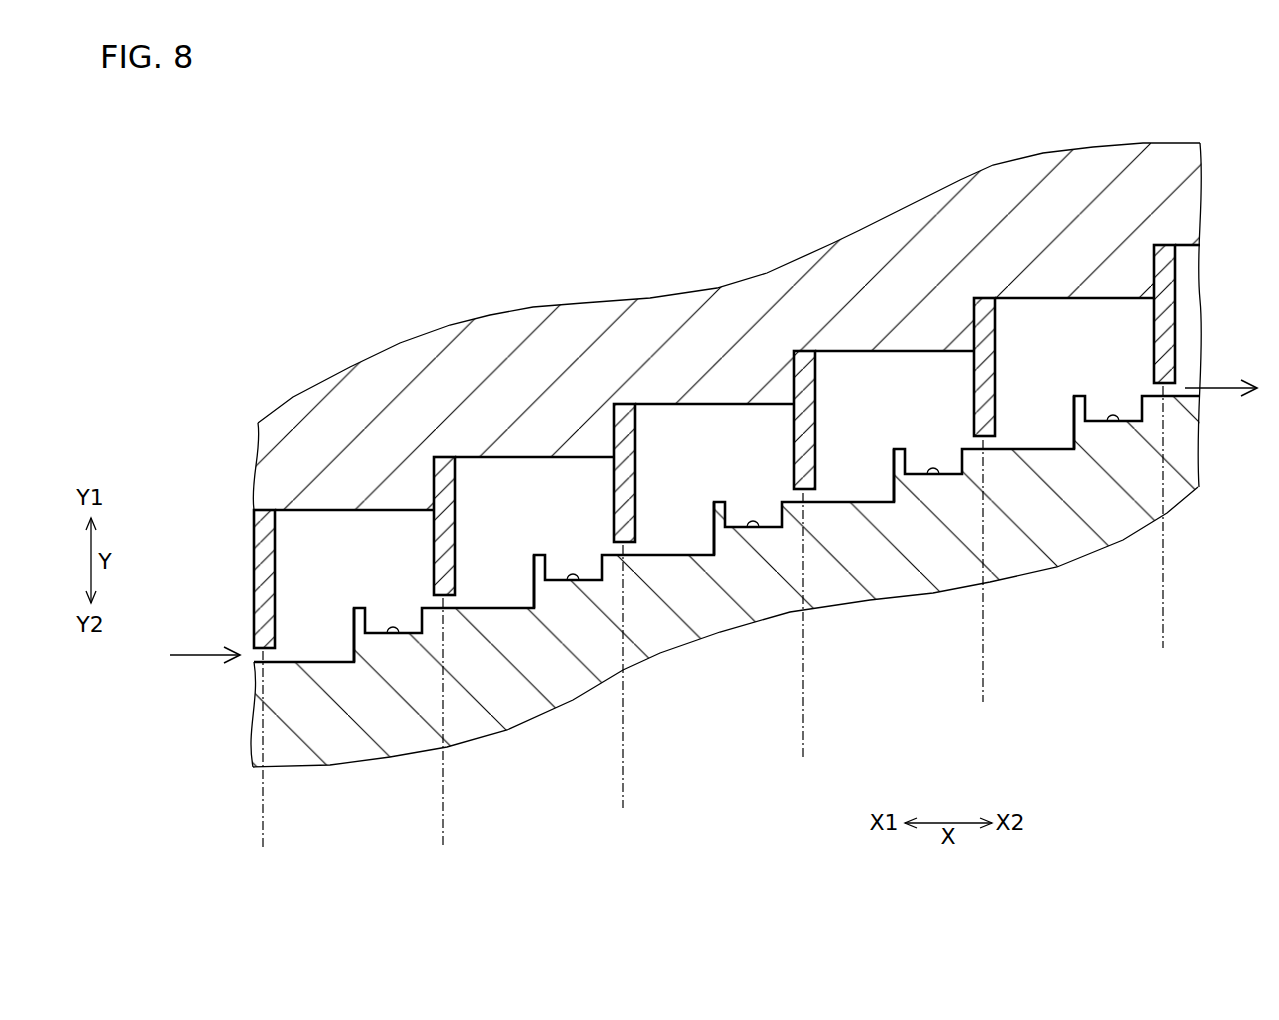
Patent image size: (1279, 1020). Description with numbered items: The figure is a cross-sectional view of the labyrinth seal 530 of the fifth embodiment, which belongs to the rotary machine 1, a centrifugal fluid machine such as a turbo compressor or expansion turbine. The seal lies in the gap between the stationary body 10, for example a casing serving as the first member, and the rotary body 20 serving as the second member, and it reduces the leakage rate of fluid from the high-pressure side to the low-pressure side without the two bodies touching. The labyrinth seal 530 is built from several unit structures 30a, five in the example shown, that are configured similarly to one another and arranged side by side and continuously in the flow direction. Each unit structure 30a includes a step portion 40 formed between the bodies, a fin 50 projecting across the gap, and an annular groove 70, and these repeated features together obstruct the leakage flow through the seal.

The rotary machine 1 is at (243, 182).
The stationary body 10 is at (255, 473).
The rotary body 20 is at (256, 748).
The unit structure 30a is at (1163, 639).
The step portion 40 is at (700, 609).
The fin 50 is at (714, 366).
The annular groove 70 is at (759, 609).
The labyrinth seal 530 is at (238, 607).